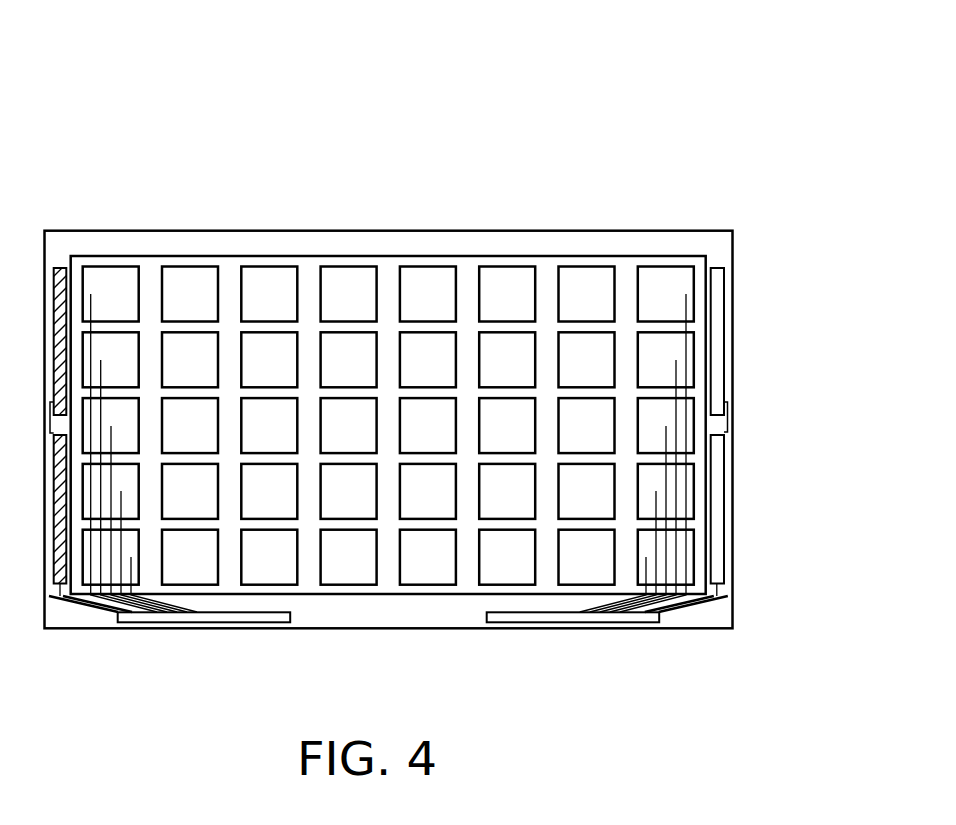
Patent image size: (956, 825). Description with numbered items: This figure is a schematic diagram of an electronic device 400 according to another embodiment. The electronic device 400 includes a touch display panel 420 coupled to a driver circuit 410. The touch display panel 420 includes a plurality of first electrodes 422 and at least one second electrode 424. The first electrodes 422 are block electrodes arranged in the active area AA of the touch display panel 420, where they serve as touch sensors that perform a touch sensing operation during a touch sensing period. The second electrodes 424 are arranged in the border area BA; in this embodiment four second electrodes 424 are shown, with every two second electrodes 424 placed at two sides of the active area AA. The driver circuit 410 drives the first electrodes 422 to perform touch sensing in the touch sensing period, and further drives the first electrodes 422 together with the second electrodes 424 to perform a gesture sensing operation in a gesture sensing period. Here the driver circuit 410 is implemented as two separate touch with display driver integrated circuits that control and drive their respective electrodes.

The electronic device 400 is at (713, 230).
The driver circuit 410 is at (472, 348).
The touch display panel 420 is at (388, 345).
The first electrode 422 is at (652, 267).
The second electrode 424 is at (720, 292).
The active area AA is at (231, 284).
The border area BA is at (343, 245).